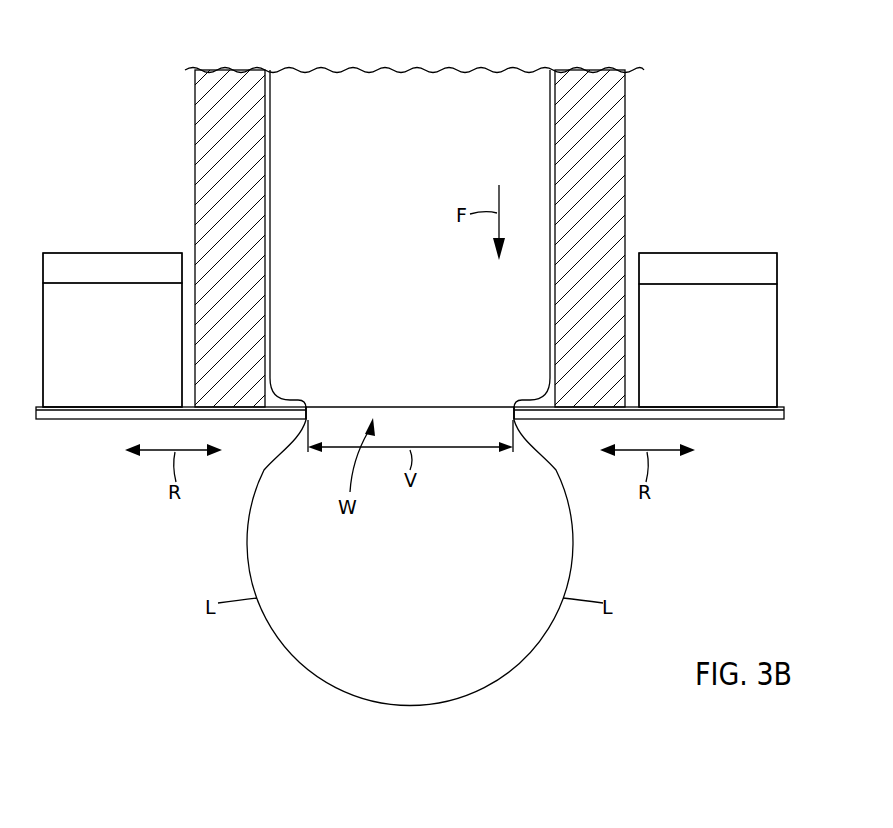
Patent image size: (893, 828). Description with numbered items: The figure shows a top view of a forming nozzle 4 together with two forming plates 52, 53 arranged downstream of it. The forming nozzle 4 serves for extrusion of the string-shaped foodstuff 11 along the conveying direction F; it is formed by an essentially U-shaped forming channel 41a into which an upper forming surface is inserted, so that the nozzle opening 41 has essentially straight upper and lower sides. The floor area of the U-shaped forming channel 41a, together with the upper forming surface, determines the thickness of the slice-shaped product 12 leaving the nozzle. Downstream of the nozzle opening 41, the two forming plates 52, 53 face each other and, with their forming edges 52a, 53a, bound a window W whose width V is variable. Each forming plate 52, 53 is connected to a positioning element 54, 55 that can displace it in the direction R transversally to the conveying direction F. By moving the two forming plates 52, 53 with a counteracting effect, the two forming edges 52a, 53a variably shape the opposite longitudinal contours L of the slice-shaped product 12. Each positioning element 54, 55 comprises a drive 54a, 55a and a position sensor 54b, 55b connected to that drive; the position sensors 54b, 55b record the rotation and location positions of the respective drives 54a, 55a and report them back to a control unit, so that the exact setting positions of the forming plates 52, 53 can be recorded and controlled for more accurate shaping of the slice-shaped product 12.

The forming nozzle 4 is at (696, 47).
The string-shaped foodstuff 11 is at (423, 283).
The slice-shaped product 12 is at (422, 557).
The nozzle opening 41 is at (426, 405).
The U-shaped forming channel 41a is at (228, 72).
The forming plate 52 is at (80, 421).
The forming edge 52a is at (303, 424).
The forming plate 53 is at (742, 421).
The forming edge 53a is at (518, 424).
The positioning element 54 is at (71, 238).
The drive 54a is at (130, 348).
The position sensor 54b is at (113, 262).
The positioning element 55 is at (748, 240).
The drive 55a is at (726, 348).
The position sensor 55b is at (708, 262).